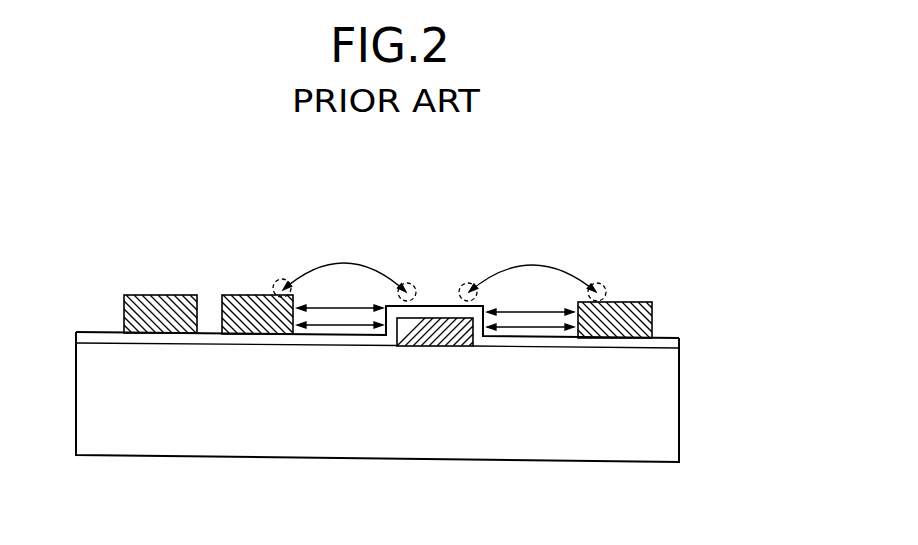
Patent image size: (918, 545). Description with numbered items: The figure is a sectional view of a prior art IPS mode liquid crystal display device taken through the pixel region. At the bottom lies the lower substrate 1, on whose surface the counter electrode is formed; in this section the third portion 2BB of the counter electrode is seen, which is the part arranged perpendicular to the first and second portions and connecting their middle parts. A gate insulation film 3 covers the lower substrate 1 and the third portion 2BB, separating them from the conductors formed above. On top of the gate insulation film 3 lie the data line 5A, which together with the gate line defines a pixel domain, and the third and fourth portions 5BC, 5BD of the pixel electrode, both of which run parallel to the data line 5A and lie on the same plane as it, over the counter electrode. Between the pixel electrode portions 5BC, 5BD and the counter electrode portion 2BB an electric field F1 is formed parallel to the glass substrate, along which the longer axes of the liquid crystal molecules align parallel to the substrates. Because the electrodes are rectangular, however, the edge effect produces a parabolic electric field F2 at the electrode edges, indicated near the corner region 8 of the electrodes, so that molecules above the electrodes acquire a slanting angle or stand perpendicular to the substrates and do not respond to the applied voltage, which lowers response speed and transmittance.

The lower substrate 1 is at (676, 410).
The gate insulation film 3 is at (680, 342).
The third portion of counter electrode 2BB is at (430, 347).
The data line 5A is at (133, 295).
The third portion of pixel electrode 5BC is at (240, 295).
The fourth portion of pixel electrode 5BD is at (627, 302).
The stress concentration corner 8 is at (283, 279).
The electric field F1 is at (335, 327).
The parabolic electric field F2 is at (352, 263).